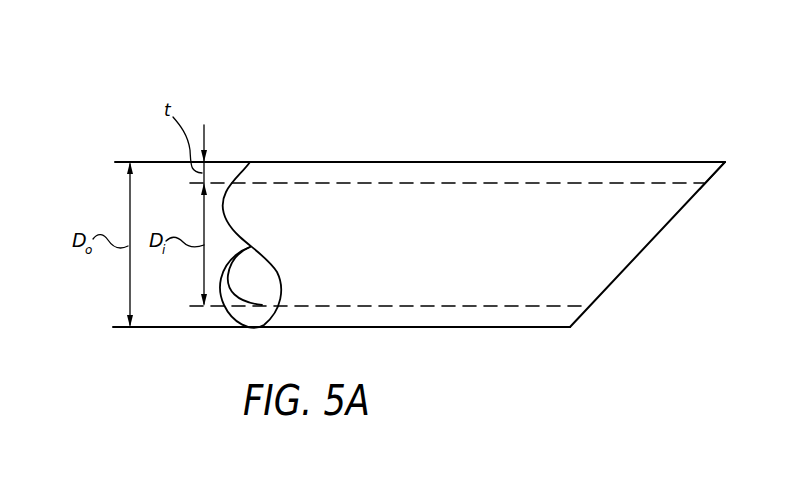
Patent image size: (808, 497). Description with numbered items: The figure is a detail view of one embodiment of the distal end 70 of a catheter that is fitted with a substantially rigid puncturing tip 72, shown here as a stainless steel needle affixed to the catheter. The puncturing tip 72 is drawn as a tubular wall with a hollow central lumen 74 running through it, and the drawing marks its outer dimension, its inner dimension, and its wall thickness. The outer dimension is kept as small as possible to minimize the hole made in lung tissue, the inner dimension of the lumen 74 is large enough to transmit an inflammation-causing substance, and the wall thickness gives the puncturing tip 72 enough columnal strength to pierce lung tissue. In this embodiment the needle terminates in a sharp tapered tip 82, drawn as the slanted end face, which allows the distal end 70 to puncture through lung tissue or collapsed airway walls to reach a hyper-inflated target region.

The distal end 70 is at (534, 136).
The puncturing tip 72 is at (727, 152).
The hollow central lumen 74 is at (503, 287).
The sharp tapered tip 82 is at (647, 245).